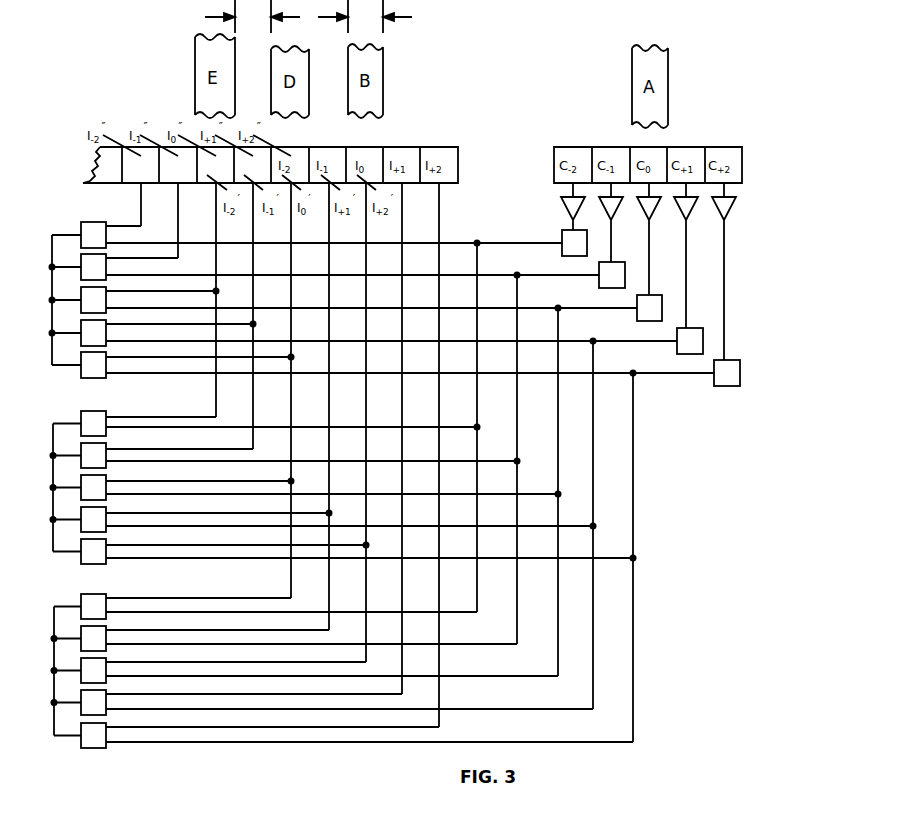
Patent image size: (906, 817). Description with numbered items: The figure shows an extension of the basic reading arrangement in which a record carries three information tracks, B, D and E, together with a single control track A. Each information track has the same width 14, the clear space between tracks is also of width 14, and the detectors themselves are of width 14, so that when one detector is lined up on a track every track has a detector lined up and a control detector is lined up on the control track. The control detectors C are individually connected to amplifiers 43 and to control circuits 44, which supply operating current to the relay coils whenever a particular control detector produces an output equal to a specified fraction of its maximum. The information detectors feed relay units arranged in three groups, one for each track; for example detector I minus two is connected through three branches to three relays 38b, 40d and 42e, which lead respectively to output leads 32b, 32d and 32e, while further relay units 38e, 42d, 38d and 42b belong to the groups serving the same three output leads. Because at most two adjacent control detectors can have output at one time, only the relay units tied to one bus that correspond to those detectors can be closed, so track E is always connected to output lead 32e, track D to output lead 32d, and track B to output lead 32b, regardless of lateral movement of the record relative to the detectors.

The track width 14 is at (308, 16).
The output lead 32e is at (52, 300).
The output lead 32d is at (53, 488).
The output lead 32b is at (54, 670).
The relay unit 38e is at (91, 222).
The relay unit 38d is at (95, 411).
The relay unit 38b is at (98, 594).
The relay unit 40d is at (82, 493).
The relay unit 42e is at (80, 373).
The relay unit 42d is at (80, 564).
The relay unit 42b is at (88, 749).
The amplifier 43 is at (740, 207).
The control circuit 44 is at (738, 373).